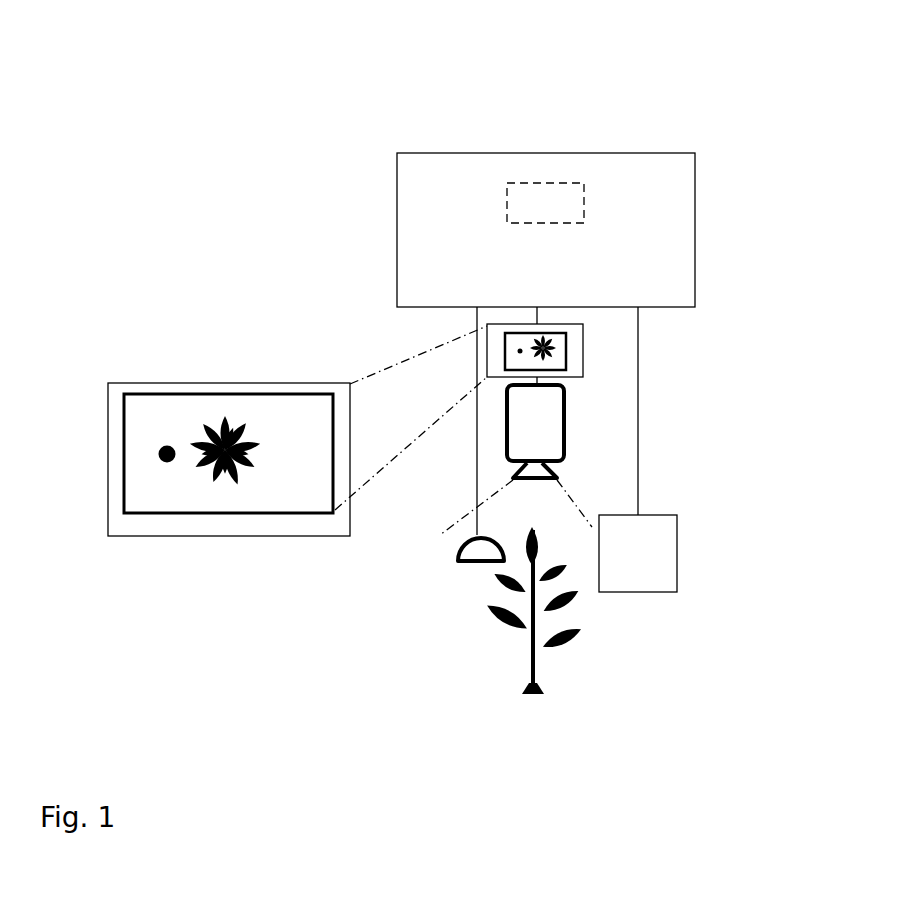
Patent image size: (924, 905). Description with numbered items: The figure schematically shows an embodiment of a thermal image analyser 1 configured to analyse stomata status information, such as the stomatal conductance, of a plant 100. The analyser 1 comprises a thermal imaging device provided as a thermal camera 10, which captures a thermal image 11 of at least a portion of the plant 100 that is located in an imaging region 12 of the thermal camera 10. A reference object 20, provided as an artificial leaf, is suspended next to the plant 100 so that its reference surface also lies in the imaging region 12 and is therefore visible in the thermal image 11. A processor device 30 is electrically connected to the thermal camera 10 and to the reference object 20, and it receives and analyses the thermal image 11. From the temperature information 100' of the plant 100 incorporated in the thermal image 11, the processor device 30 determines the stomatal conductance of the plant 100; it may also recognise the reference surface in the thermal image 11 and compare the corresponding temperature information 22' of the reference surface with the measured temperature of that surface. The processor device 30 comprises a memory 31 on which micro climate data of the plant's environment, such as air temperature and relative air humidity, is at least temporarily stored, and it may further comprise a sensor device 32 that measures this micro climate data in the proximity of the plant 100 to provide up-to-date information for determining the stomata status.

The thermal image analyser 1 is at (865, 103).
The thermal camera 10 is at (566, 427).
The thermal image 11 is at (237, 394).
The imaging region 12 is at (573, 500).
The reference object 20 is at (458, 553).
The temperature information of the reference surface 22' is at (141, 536).
The processor device 30 is at (695, 210).
The memory 31 is at (545, 183).
The sensor device 32 is at (677, 552).
The plant 100 is at (495, 629).
The temperature information of the plant 100' is at (242, 512).